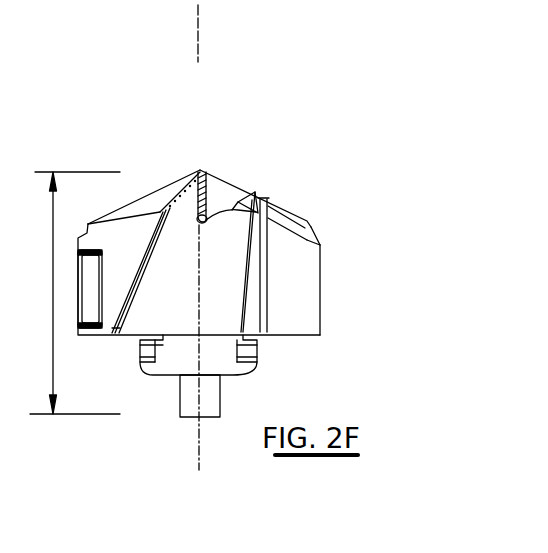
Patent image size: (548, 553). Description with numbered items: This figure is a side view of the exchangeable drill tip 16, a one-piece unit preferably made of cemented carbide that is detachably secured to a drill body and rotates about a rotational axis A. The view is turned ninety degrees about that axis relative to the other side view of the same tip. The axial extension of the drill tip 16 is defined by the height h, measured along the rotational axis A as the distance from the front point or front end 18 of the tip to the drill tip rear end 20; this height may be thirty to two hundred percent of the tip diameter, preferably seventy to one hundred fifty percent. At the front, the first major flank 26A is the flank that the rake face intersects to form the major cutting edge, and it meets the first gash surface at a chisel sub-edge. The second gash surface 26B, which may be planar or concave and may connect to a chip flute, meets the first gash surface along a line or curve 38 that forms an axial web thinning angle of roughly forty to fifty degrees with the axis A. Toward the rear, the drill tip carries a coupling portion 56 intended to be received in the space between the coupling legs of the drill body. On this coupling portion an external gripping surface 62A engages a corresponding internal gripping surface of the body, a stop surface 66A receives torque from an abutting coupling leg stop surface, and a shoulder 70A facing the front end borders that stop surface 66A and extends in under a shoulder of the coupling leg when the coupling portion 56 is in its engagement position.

The drill tip 16 is at (283, 157).
The front end 18 is at (198, 170).
The drill tip rear end 20 is at (200, 418).
The first major flank 26A is at (131, 210).
The second gash surface 26B is at (222, 193).
The line or curve 38 is at (204, 216).
The coupling portion 56 is at (293, 353).
The external gripping surface 62A is at (253, 324).
The stop surface 66A is at (304, 284).
The shoulder 70A is at (305, 234).
The rotational axis A is at (200, 48).
The height h is at (69, 293).